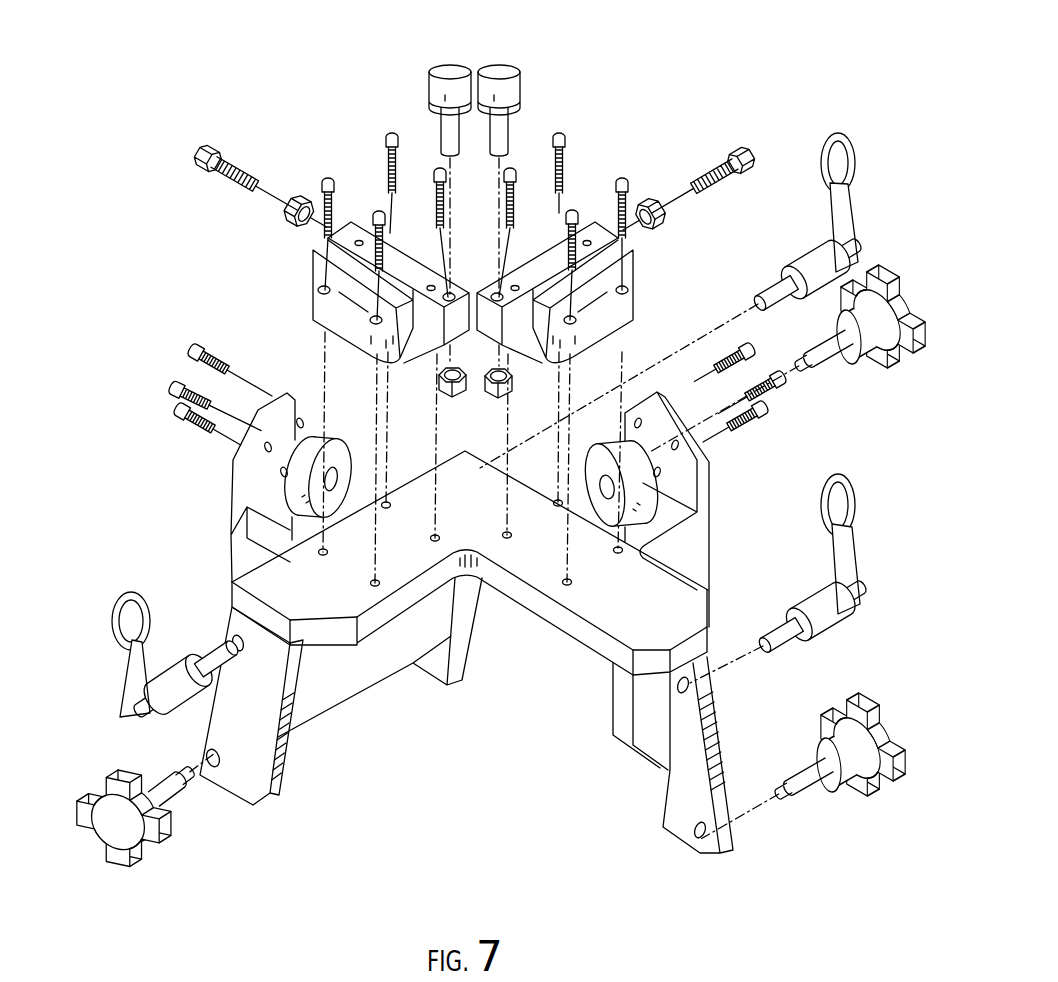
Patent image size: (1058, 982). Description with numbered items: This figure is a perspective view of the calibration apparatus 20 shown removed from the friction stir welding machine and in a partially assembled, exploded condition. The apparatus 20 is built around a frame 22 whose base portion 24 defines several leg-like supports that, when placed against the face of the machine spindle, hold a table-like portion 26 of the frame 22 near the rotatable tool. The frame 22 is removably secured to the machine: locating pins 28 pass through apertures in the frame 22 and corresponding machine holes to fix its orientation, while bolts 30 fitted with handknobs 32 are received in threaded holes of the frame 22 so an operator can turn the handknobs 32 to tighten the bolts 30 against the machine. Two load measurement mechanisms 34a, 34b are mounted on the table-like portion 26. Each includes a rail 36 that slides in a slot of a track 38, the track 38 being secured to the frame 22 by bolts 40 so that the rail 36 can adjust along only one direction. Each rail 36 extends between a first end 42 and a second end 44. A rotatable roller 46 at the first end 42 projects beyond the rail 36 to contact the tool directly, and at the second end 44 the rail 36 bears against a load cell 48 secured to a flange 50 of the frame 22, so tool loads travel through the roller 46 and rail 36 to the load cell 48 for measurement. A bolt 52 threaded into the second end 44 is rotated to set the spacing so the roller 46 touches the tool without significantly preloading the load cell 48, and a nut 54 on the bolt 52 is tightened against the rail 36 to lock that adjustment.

The apparatus 20 is at (812, 108).
The frame 22 is at (340, 697).
The base portion 24 is at (243, 785).
The table-like portion 26 is at (605, 607).
The locating pins 28 is at (193, 670).
The bolts 30 is at (177, 793).
The handknobs 32 is at (102, 837).
The load measurement mechanism 34a is at (362, 157).
The load measurement mechanism 34b is at (637, 177).
The rail 36 is at (597, 230).
The track 38 is at (313, 302).
The bolts 40 is at (392, 131).
The first end 42 is at (490, 333).
The second end 44 is at (320, 241).
The roller 46 is at (492, 70).
The load cell 48 is at (298, 473).
The flange 50 is at (196, 372).
The bolt 52 is at (237, 188).
The nut 54 is at (295, 200).